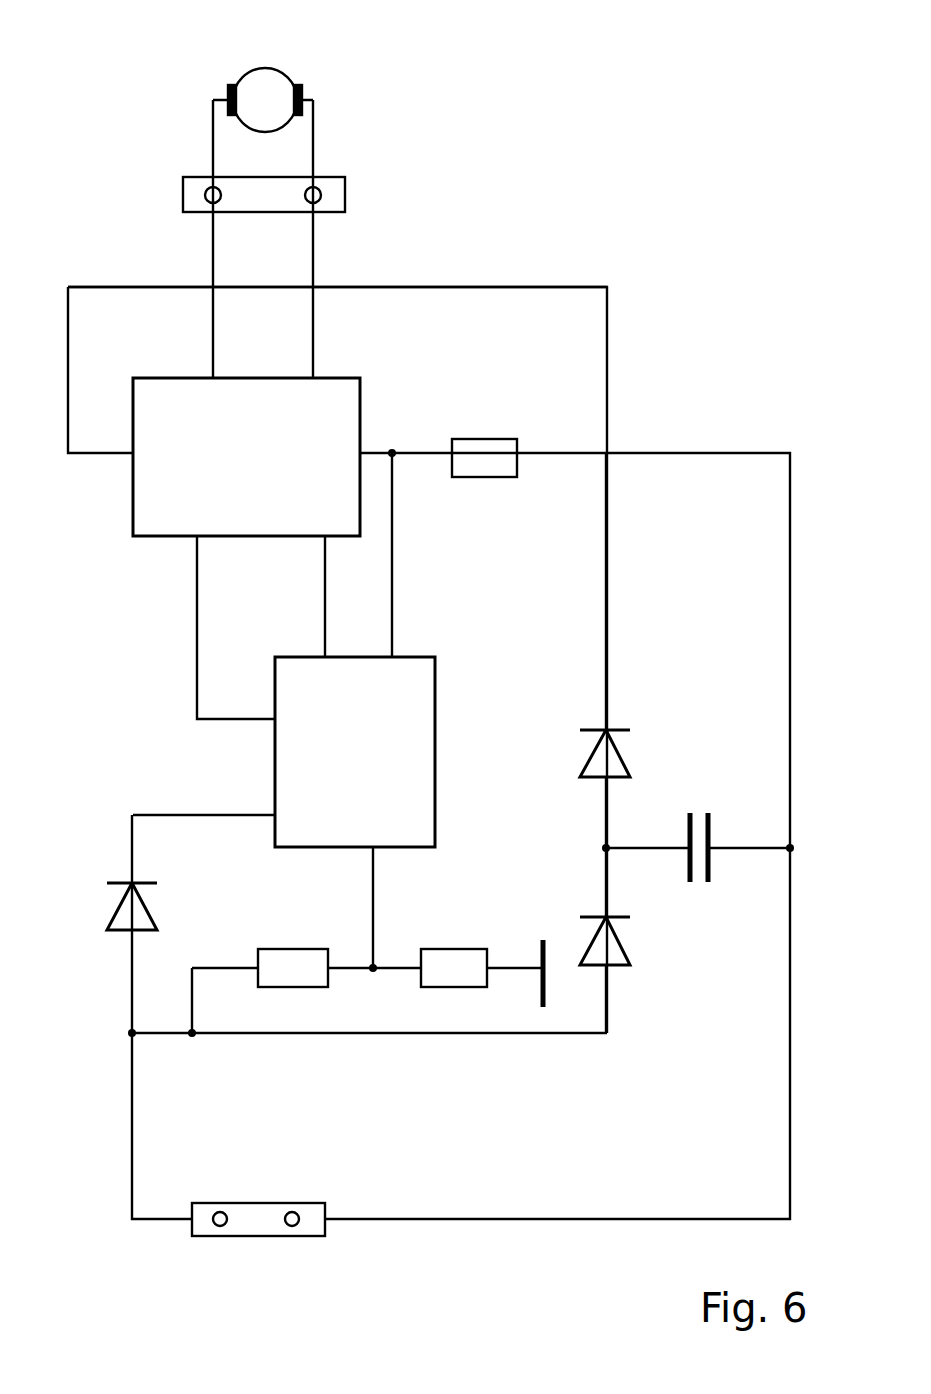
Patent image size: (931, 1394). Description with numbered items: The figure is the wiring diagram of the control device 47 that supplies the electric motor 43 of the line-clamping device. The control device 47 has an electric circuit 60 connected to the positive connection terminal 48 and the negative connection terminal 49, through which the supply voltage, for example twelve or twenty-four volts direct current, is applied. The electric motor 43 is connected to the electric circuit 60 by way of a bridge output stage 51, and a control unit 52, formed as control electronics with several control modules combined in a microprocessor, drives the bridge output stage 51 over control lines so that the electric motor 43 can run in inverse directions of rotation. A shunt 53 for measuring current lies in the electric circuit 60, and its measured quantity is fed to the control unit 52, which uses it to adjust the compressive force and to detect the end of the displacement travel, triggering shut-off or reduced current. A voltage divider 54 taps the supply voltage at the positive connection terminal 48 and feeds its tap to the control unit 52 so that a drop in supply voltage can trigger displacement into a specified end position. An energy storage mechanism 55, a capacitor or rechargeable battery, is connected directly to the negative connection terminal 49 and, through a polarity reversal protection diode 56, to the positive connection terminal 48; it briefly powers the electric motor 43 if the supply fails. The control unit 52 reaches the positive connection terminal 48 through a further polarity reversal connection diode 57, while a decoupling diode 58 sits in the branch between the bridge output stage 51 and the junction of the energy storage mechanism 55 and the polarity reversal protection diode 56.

The electric motor 43 is at (266, 80).
The control device 47 is at (474, 224).
The positive connection terminal 48 is at (225, 1212).
The negative connection terminal 49 is at (294, 1212).
The bridge output stage 51 is at (246, 457).
The control unit 52 is at (355, 752).
The shunt 53 is at (483, 452).
The voltage divider 54 is at (458, 958).
The energy storage mechanism 55 is at (710, 822).
The polarity reversal protection diode 56 is at (613, 950).
The further polarity reversal connection diode 57 is at (143, 920).
The decoupling diode 58 is at (611, 760).
The electric circuit 60 is at (532, 287).